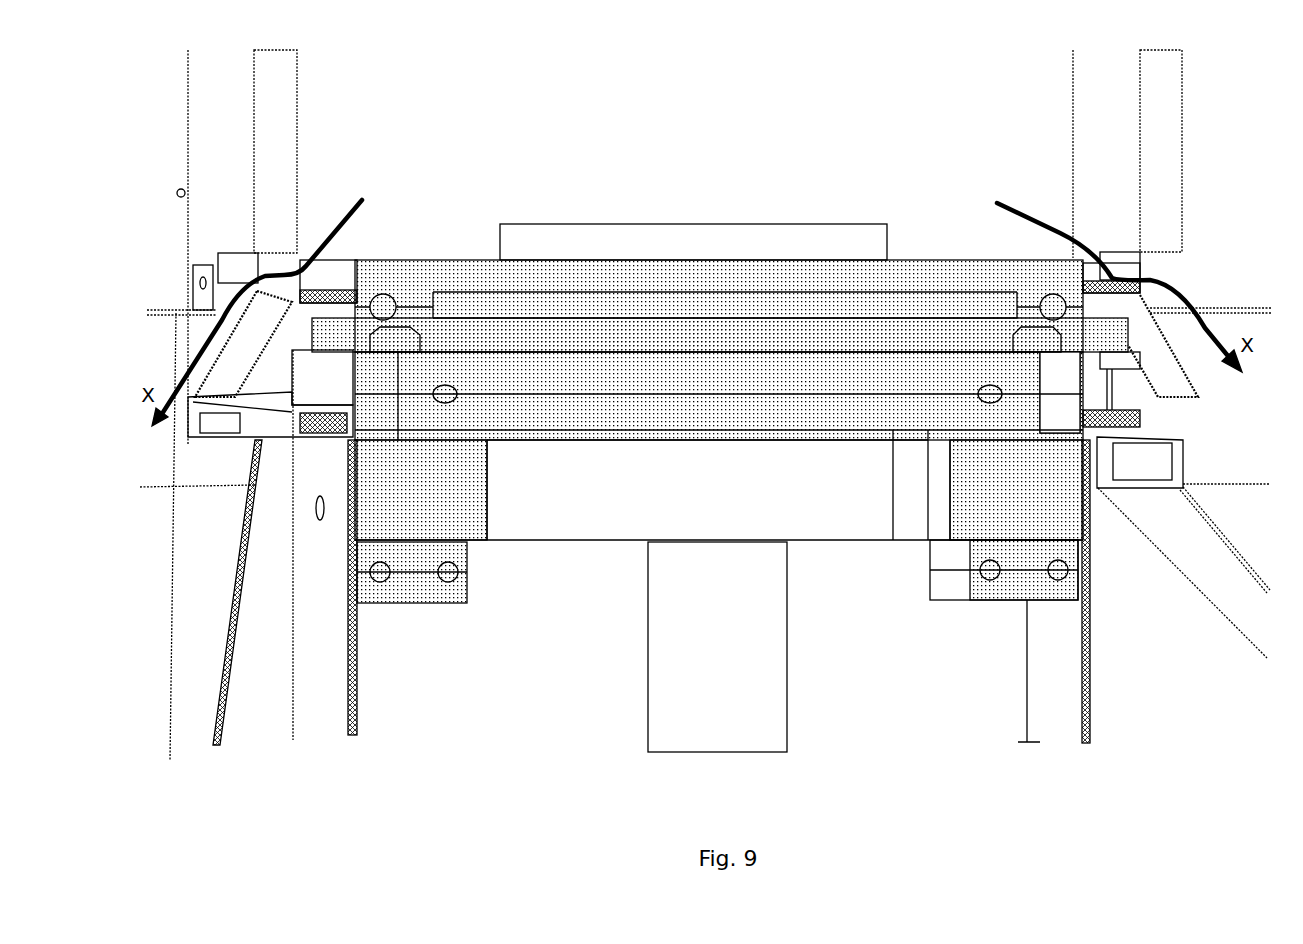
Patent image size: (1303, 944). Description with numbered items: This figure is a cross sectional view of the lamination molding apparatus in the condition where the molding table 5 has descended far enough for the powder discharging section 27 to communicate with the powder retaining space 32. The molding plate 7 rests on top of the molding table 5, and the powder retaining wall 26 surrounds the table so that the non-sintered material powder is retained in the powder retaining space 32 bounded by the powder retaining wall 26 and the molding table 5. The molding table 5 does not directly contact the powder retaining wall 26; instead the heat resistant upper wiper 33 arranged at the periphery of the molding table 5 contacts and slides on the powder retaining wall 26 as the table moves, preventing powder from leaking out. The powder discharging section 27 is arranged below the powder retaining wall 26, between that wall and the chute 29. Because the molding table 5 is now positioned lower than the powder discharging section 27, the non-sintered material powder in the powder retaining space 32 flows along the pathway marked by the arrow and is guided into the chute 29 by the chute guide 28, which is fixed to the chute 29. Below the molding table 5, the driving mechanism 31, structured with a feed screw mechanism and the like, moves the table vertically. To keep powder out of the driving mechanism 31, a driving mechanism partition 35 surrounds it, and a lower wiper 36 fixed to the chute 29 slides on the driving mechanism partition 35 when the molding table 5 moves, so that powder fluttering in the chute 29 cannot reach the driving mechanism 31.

The molding table 5 is at (917, 270).
The molding plate 7 is at (738, 224).
The powder retaining wall 26 is at (284, 112).
The powder discharging section 27 is at (226, 264).
The chute guide 28 is at (227, 369).
The chute 29 is at (228, 643).
The driving mechanism 31 is at (780, 708).
The powder retaining space 32 is at (840, 156).
The upper wiper 33 is at (355, 283).
The driving mechanism partition 35 is at (357, 691).
The lower wiper 36 is at (322, 437).